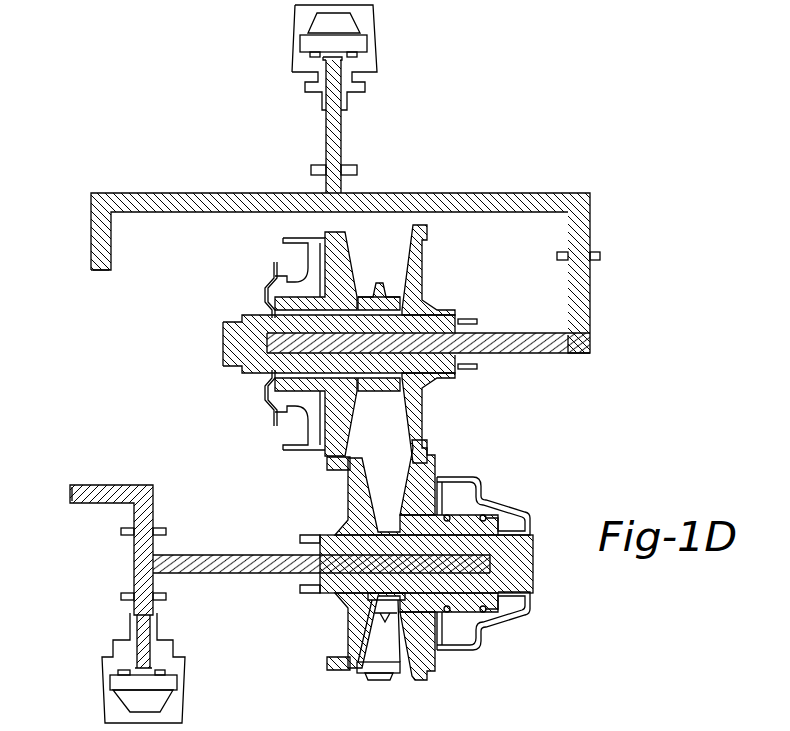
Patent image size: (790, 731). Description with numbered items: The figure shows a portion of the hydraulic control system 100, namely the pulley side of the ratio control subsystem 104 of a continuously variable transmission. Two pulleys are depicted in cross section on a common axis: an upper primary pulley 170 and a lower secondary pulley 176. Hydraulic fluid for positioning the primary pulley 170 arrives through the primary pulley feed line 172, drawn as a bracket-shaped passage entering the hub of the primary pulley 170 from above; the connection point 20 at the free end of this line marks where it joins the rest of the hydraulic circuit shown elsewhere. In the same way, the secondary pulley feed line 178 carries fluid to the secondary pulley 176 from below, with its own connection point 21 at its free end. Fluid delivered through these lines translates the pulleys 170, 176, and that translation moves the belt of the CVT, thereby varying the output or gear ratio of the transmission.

The primary pulley feed line 172 is at (197, 193).
The connection point 20 is at (101, 284).
The primary pulley 170 is at (423, 267).
The ratio control subsystem 104 is at (386, 548).
The secondary pulley 176 is at (343, 600).
The secondary pulley feed line 178 is at (98, 485).
The connection point 21 is at (59, 496).
The hydraulic control system 100 is at (572, 717).